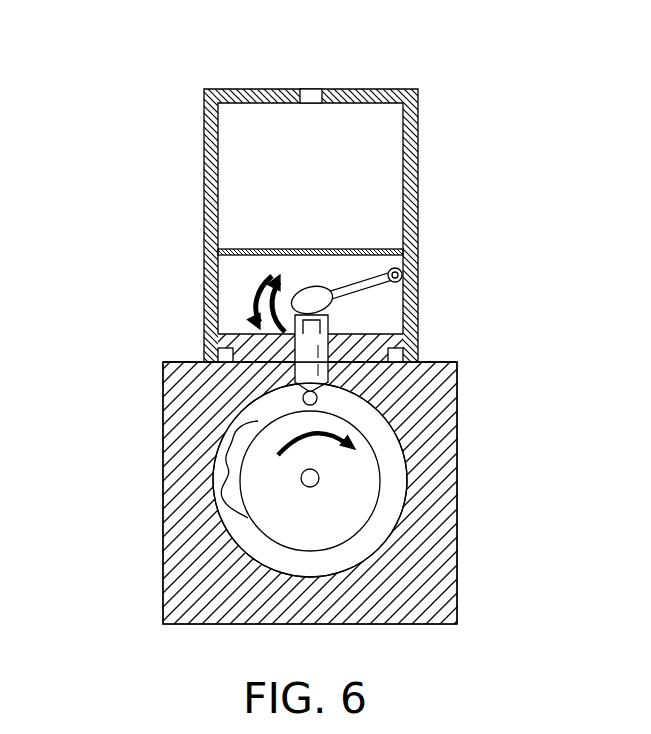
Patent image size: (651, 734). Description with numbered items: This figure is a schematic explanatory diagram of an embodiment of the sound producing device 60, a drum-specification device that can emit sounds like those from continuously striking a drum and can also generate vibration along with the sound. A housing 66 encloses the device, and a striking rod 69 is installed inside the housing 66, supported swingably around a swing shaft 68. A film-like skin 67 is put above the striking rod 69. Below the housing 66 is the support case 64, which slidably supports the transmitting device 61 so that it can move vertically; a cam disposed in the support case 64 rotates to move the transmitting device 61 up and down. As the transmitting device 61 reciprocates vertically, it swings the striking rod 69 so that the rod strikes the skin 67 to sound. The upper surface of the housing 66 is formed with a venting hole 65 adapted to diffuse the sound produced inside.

The sound producing device 60 is at (292, 203).
The transmitting device 61 is at (303, 355).
The support case 64 is at (155, 438).
The venting hole 65 is at (311, 96).
The housing 66 is at (204, 118).
The skin 67 is at (254, 249).
The swing shaft 68 is at (418, 272).
The striking rod 69 is at (378, 293).